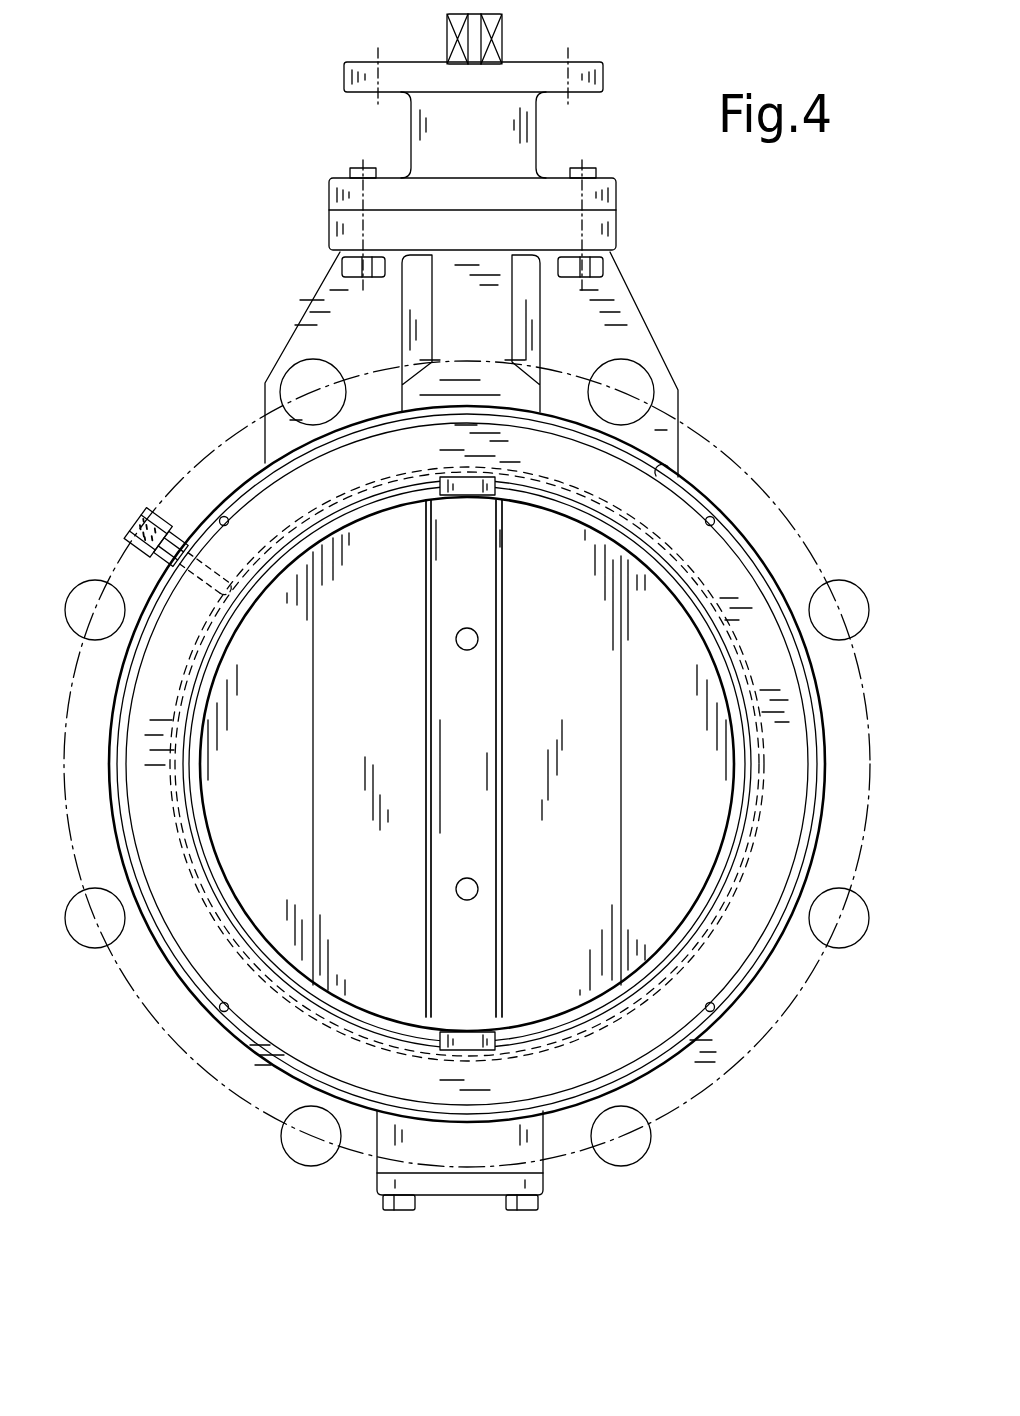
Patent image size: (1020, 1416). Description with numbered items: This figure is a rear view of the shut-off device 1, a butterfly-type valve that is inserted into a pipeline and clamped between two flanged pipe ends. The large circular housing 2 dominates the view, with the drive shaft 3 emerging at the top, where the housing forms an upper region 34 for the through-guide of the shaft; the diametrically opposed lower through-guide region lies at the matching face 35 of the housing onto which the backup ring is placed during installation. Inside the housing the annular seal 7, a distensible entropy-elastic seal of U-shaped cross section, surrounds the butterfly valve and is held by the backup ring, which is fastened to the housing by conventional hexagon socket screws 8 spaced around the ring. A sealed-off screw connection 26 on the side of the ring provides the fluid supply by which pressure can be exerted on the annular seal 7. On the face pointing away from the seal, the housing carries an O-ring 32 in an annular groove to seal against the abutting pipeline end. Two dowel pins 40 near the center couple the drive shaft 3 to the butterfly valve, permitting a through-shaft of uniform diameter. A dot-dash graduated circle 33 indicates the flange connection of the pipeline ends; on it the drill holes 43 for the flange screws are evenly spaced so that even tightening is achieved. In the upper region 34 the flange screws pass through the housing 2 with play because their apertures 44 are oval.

The shut-off device 1 is at (332, 1180).
The housing 2 is at (608, 328).
The drive shaft 3 is at (497, 47).
The annular seal 7 is at (738, 690).
The hexagon socket screws 8 is at (228, 516).
The screw connection 26 is at (175, 522).
The O-ring 32 is at (808, 818).
The graduated circle 33 is at (703, 1093).
The upper region 34 is at (645, 478).
The matching face 35 is at (531, 1108).
The dowel pins 40 is at (478, 636).
The drill holes 43 is at (846, 583).
The apertures 44 is at (332, 425).